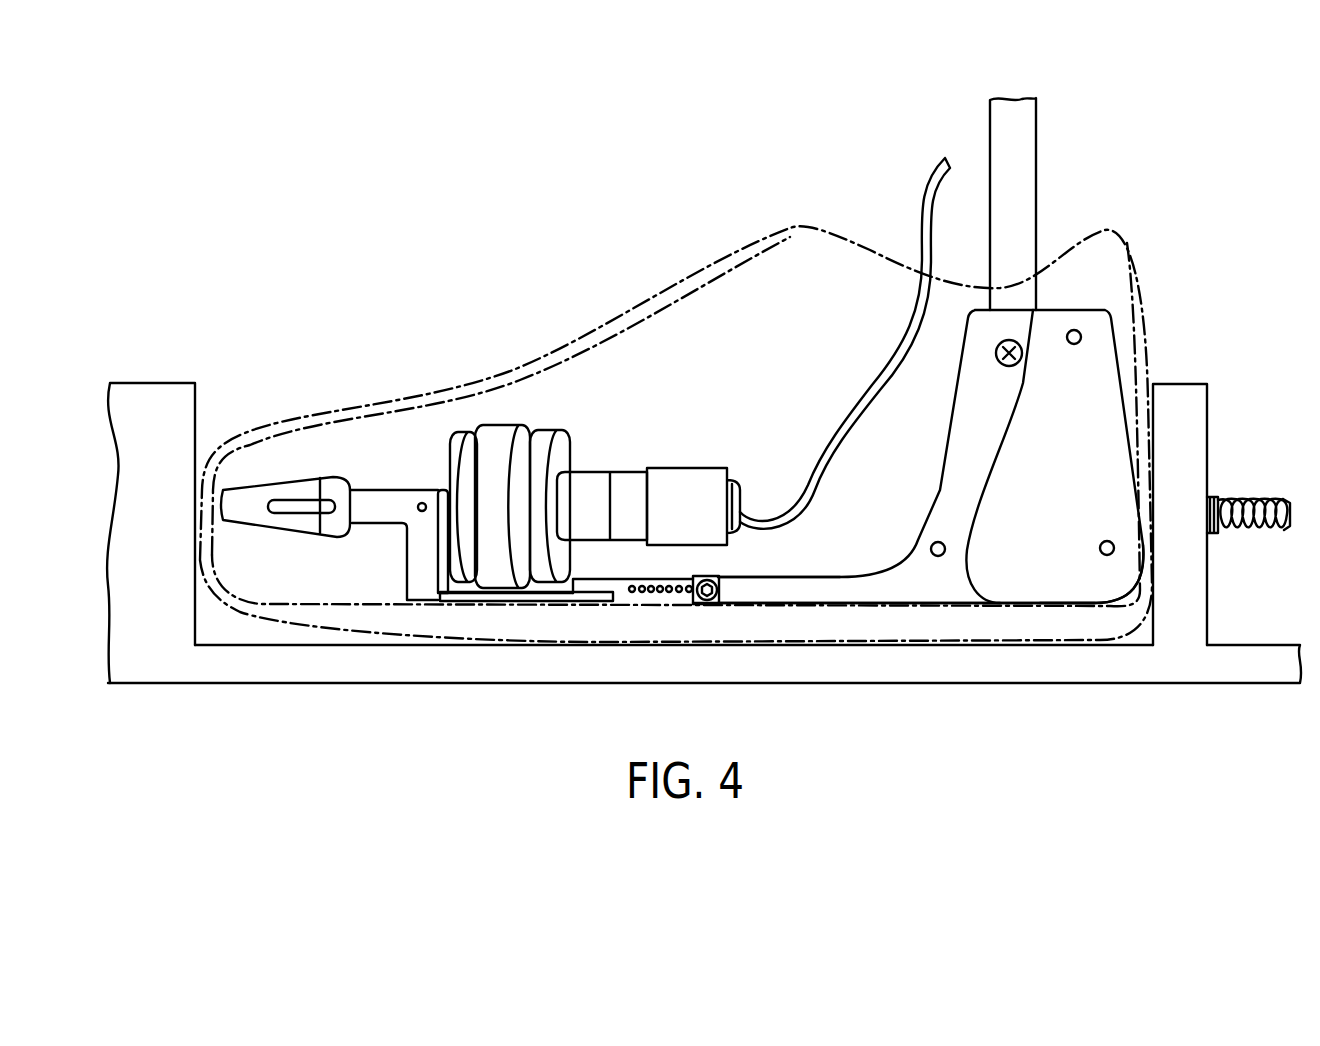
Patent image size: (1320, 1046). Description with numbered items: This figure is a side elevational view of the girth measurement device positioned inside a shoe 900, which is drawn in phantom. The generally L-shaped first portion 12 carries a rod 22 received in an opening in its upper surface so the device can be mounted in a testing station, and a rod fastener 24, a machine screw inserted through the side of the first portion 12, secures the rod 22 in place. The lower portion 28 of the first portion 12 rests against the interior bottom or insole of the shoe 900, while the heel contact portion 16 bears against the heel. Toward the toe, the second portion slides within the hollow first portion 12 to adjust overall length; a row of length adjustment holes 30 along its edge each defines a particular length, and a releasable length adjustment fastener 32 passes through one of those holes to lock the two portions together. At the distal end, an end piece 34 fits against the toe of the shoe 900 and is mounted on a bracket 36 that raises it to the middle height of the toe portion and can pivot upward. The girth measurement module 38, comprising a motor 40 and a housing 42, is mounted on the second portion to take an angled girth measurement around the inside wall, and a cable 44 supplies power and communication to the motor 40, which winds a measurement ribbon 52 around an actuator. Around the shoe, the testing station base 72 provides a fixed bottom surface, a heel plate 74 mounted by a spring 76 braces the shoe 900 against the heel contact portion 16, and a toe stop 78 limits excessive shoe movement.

The first portion 12 is at (1111, 338).
The heel contact portion 16 is at (1110, 585).
The rod 22 is at (1028, 181).
The rod fastener 24 is at (996, 360).
The lower portion 28 is at (818, 585).
The length adjustment holes 30 is at (632, 593).
The length adjustment fastener 32 is at (715, 600).
The end piece 34 is at (243, 497).
The bracket 36 is at (405, 560).
The girth measurement module 38 is at (612, 472).
The motor 40 is at (640, 478).
The housing 42 is at (533, 443).
The cable 44 is at (843, 405).
The measurement ribbon 52 is at (495, 440).
The base 72 is at (950, 670).
The heel plate 74 is at (1195, 419).
The spring 76 is at (1263, 530).
The toe stop 78 is at (168, 398).
The shoe 900 is at (395, 405).